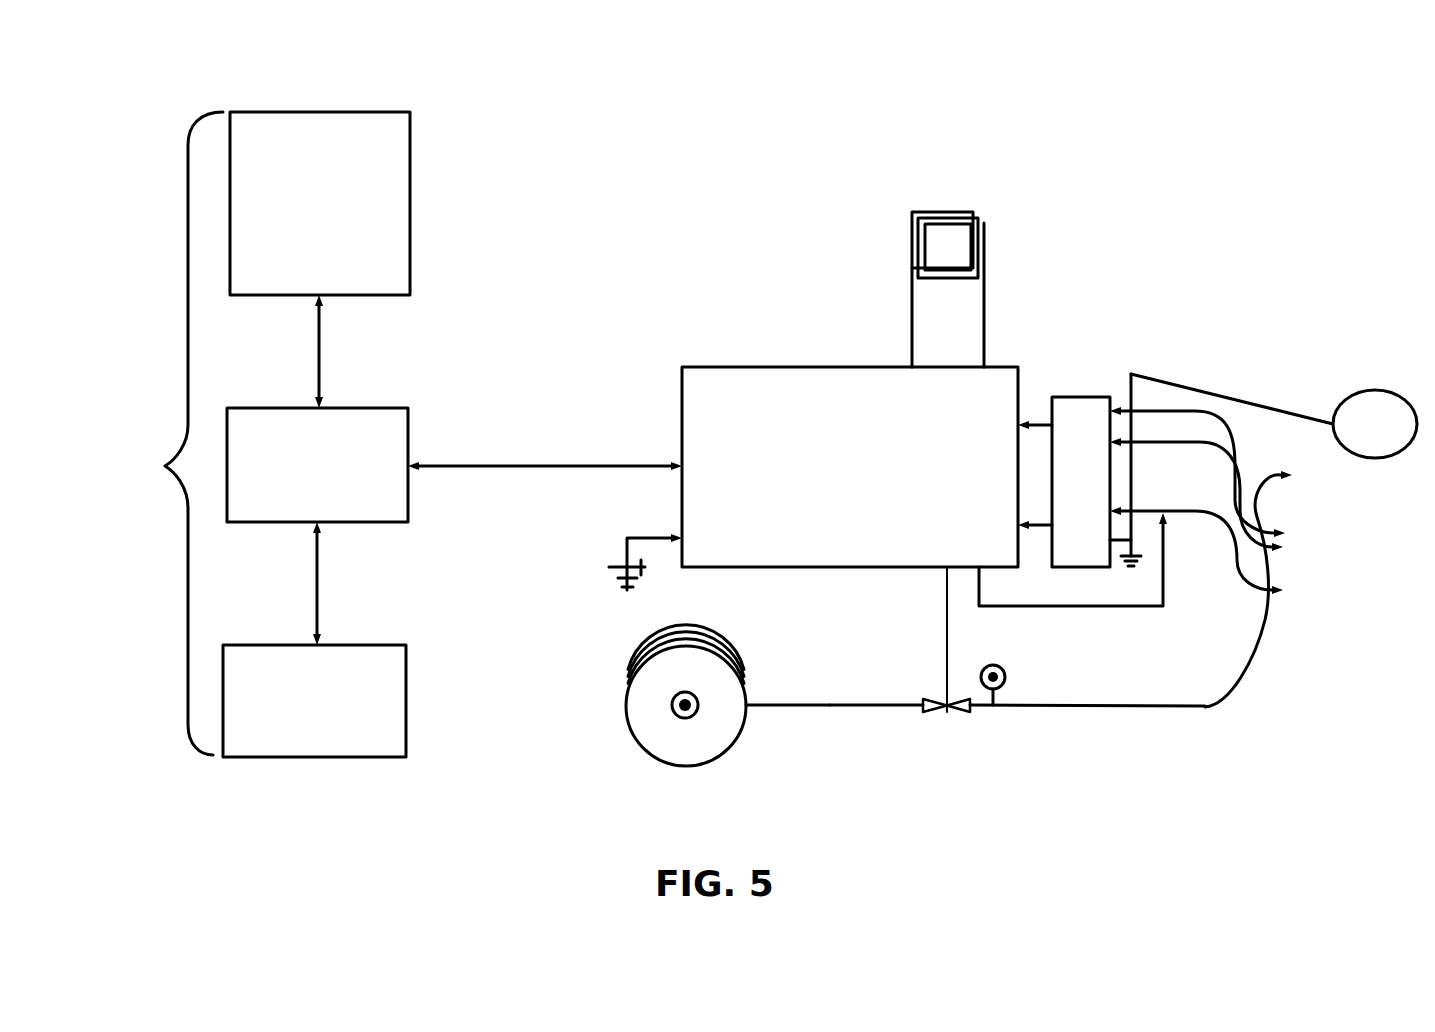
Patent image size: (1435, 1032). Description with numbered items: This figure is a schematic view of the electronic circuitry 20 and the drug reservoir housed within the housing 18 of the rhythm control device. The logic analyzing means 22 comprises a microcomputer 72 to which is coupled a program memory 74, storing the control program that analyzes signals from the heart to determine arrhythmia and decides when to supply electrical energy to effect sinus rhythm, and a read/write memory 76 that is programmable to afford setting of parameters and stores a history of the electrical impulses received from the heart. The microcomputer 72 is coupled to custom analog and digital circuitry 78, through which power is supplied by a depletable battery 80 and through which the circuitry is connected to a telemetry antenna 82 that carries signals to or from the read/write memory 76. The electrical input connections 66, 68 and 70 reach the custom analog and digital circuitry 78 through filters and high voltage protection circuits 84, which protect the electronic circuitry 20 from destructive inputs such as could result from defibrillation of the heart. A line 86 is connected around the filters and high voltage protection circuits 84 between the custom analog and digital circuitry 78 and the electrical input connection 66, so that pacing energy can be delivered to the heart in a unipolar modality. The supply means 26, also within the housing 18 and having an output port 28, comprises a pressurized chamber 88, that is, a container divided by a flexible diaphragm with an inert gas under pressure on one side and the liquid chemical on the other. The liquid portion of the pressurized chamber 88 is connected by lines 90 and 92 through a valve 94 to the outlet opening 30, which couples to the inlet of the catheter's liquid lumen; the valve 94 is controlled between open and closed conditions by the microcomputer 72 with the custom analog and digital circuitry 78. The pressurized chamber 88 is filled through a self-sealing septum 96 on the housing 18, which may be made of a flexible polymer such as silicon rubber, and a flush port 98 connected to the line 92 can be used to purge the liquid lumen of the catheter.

The housing 18 is at (1283, 404).
The electronic circuitry 20 is at (699, 160).
The logic analyzing means 22 is at (174, 433).
The supply means 26 is at (686, 729).
The output port 28 is at (788, 734).
The outlet opening 30 is at (1288, 586).
The electrical input connection 66 is at (1230, 550).
The electrical input connection 68 is at (1240, 496).
The electrical input connection 70 is at (1231, 472).
The microcomputer 72 is at (336, 440).
The program memory 74 is at (322, 729).
The read/write memory 76 is at (320, 174).
The custom analog and digital circuitry 78 is at (850, 440).
The battery 80 is at (622, 565).
The telemetry antenna 82 is at (977, 267).
The filters and high voltage protection circuits 84 is at (1079, 449).
The line 86 is at (1073, 593).
The pressurized chamber 88 is at (653, 691).
The line 90 is at (876, 739).
The line 92 is at (1087, 739).
The valve 94 is at (950, 670).
The self-sealing septum 96 is at (654, 744).
The flush port 98 is at (1000, 660).